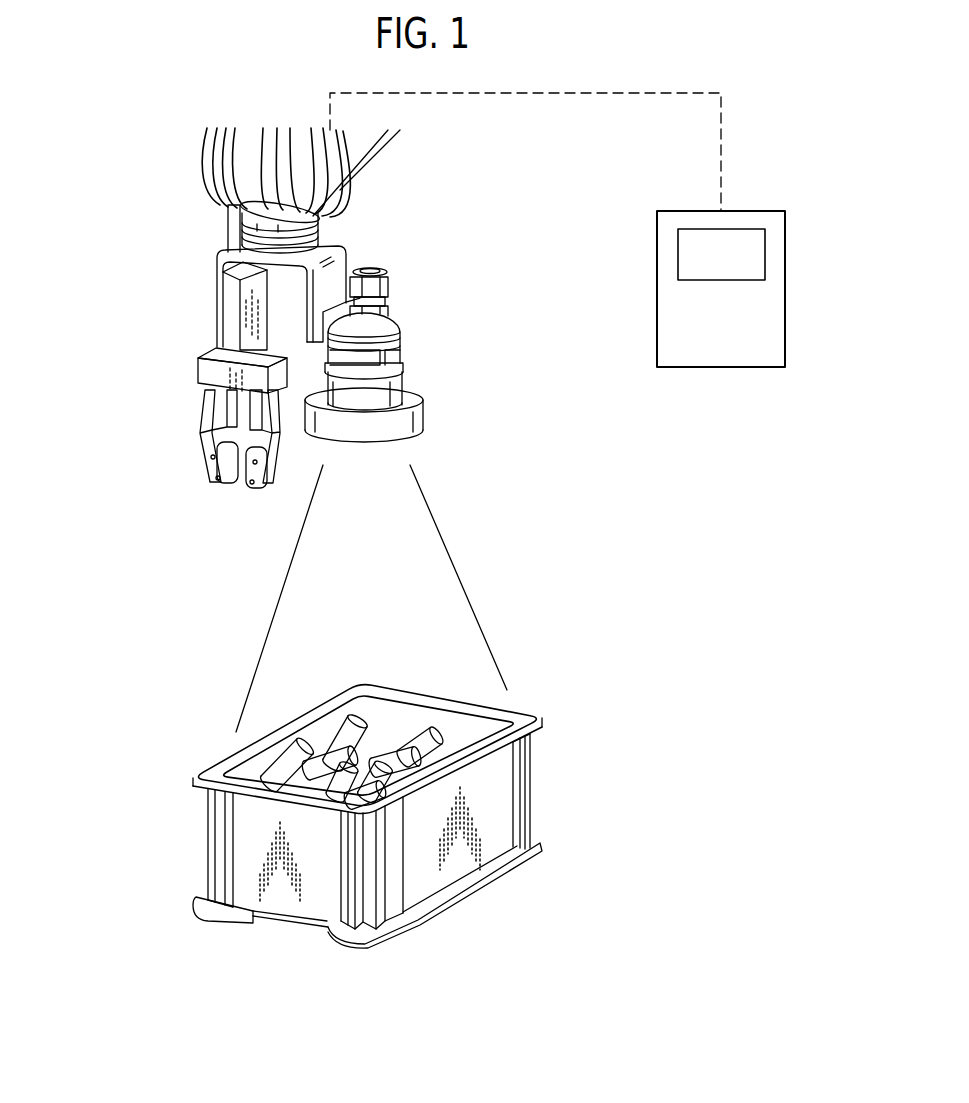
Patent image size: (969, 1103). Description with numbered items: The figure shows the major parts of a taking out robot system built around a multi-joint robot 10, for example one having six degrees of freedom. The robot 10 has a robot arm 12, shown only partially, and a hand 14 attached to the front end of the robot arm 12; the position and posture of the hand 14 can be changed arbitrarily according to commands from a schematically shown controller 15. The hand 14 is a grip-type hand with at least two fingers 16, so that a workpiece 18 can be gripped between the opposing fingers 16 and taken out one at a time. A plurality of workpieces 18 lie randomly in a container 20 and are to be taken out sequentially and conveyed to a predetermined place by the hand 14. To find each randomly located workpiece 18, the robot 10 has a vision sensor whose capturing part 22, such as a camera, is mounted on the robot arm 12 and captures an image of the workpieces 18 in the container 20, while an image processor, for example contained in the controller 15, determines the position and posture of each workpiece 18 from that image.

The multi-joint robot 10 is at (253, 324).
The robot arm 12 is at (350, 158).
The hand 14 is at (187, 452).
The controller 15 is at (785, 310).
The fingers 16 is at (267, 470).
The workpiece 18 is at (405, 735).
The container 20 is at (402, 791).
The capturing part 22 is at (392, 392).